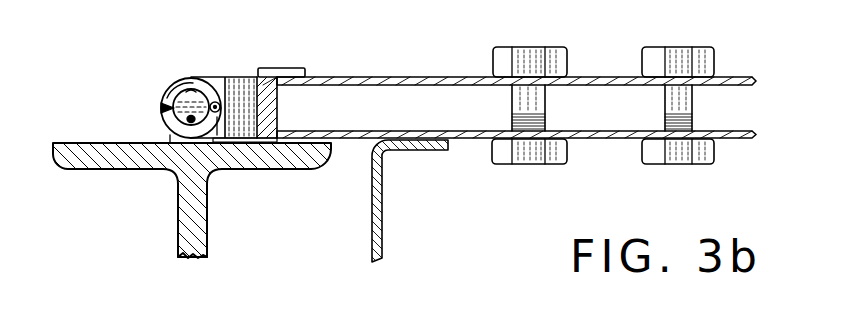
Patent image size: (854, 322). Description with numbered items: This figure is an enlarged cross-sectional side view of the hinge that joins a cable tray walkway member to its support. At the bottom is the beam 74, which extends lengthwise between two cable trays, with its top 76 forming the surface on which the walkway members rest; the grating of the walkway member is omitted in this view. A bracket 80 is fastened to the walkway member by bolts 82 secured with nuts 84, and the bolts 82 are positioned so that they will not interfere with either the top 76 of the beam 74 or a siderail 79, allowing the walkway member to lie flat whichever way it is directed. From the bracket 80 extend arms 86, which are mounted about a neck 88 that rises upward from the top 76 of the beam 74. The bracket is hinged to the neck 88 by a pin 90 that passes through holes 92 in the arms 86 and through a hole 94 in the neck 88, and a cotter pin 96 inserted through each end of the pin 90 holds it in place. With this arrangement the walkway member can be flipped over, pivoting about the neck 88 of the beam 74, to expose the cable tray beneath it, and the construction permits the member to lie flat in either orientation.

The beam 74 is at (203, 235).
The top of the beam 76 is at (123, 155).
The siderail 79 is at (382, 210).
The bracket 80 is at (393, 77).
The bolt 82 is at (517, 101).
The nut 84 is at (543, 165).
The arm 86 is at (241, 77).
The neck 88 is at (167, 138).
The pin 90 is at (183, 93).
The hole in the arm 92 is at (192, 90).
The hole in the neck 94 is at (193, 121).
The cotter pin 96 is at (220, 111).